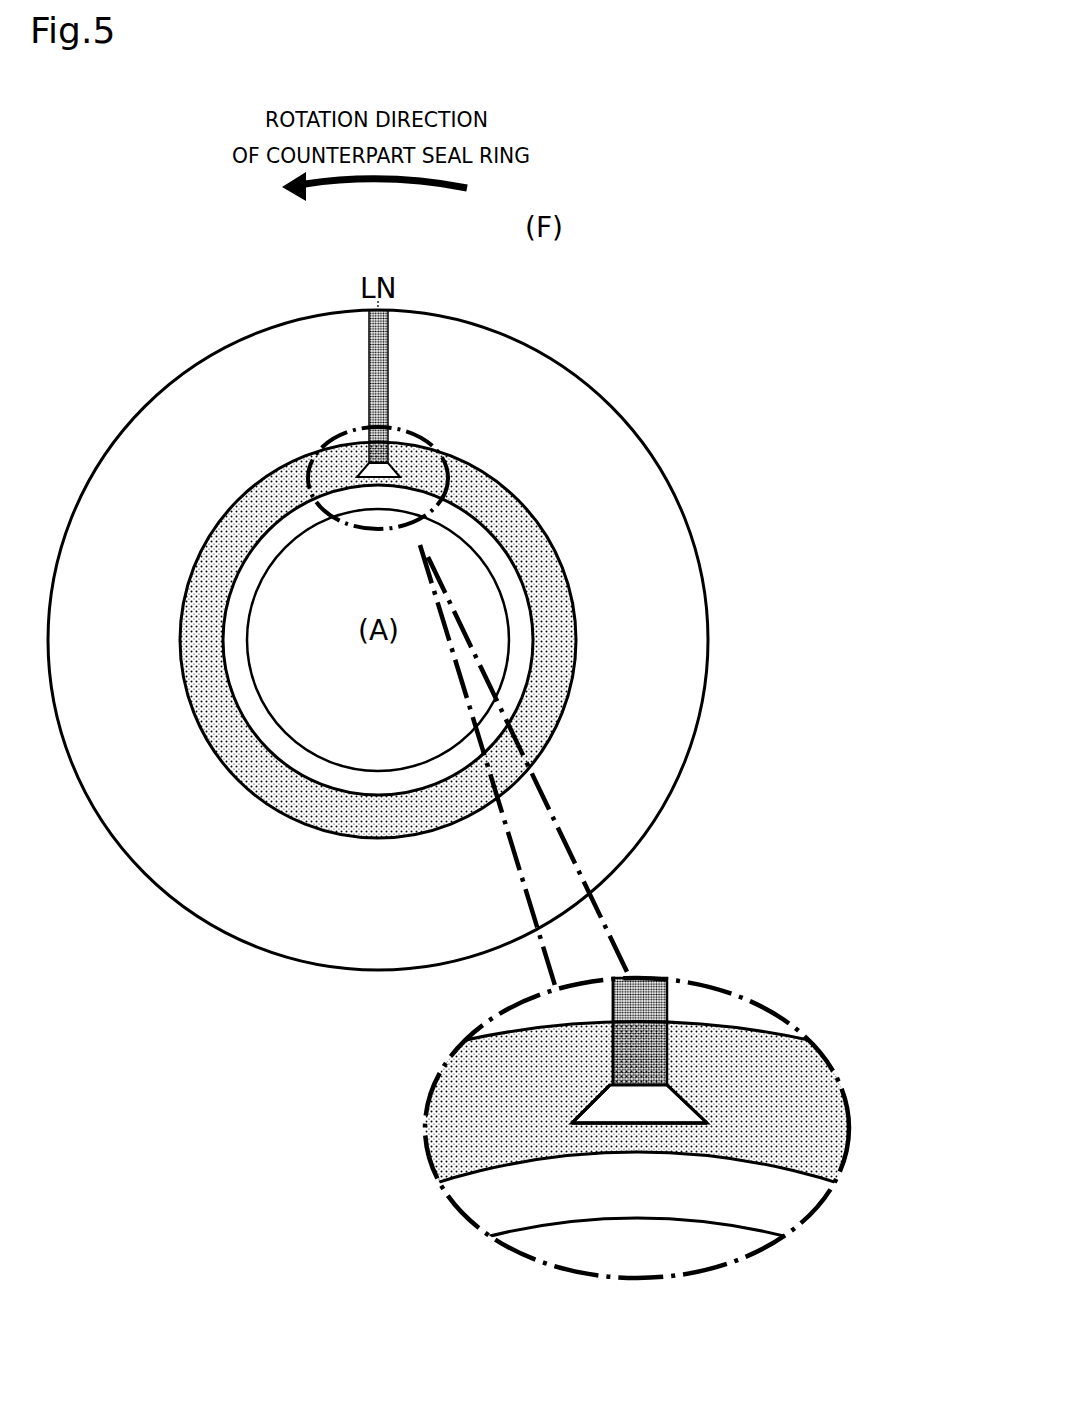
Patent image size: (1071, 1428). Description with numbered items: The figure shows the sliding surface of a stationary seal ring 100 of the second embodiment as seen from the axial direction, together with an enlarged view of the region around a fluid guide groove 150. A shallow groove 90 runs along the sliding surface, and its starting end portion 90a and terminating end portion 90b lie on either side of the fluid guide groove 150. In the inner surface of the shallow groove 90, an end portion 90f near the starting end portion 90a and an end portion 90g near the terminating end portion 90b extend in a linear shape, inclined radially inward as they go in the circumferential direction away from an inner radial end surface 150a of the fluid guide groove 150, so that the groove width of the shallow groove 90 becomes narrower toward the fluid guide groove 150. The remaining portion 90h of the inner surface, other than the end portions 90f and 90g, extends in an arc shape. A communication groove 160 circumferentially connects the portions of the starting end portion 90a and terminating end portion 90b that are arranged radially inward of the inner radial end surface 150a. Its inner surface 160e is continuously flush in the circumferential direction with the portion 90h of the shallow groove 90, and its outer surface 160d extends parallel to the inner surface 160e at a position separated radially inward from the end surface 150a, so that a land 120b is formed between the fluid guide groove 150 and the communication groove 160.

The stationary seal ring 100 is at (580, 346).
The shallow groove 90 is at (333, 452).
The starting end portion 90a is at (352, 467).
The terminating end portion 90b is at (405, 465).
The end portion 90f is at (590, 1100).
The end portion 90g is at (680, 1100).
The portion of inner surface 90h is at (572, 1123).
The land 120b is at (622, 1145).
The fluid guide groove 150 is at (367, 357).
The inner radial end surface 150a is at (580, 1067).
The communication groove 160 is at (378, 480).
The outer surface 160d is at (630, 1124).
The inner surface 160e is at (597, 1150).